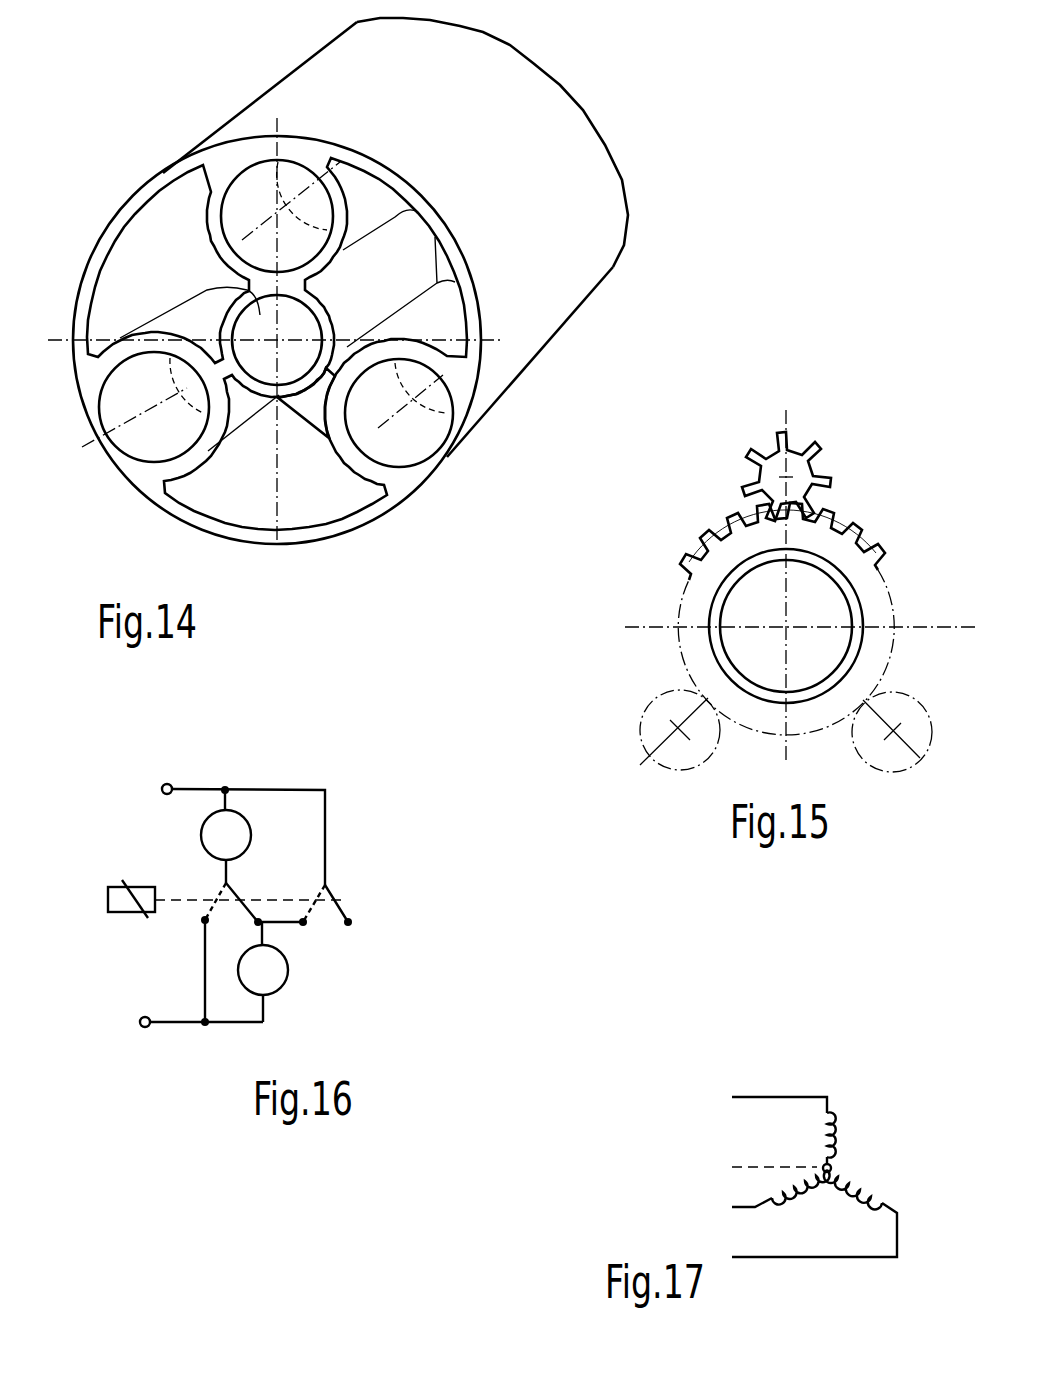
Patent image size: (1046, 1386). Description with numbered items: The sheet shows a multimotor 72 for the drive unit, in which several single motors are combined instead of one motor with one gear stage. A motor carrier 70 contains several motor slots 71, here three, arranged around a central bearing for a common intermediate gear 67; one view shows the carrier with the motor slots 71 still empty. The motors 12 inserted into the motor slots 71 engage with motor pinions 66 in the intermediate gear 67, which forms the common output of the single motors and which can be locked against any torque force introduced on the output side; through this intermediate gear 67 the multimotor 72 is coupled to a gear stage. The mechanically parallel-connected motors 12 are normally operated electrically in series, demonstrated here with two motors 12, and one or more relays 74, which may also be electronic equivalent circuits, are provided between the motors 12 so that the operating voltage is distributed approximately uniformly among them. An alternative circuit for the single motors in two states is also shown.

In FIG. 16, the motor 12 is at (228, 835).
In FIG. 15, the motor pinion 66 is at (817, 442).
In FIG. 15, the intermediate gear 67 is at (843, 558).
In FIG. 14, the motor carrier 70 is at (307, 530).
In FIG. 14, the motor slot 71 is at (305, 210).
In FIG. 14, the multimotor 72 is at (612, 288).
In FIG. 15, the multimotor 72 is at (692, 540).
In FIG. 16, the multimotor 72 is at (243, 1032).
In FIG. 16, the relay 74 is at (127, 913).